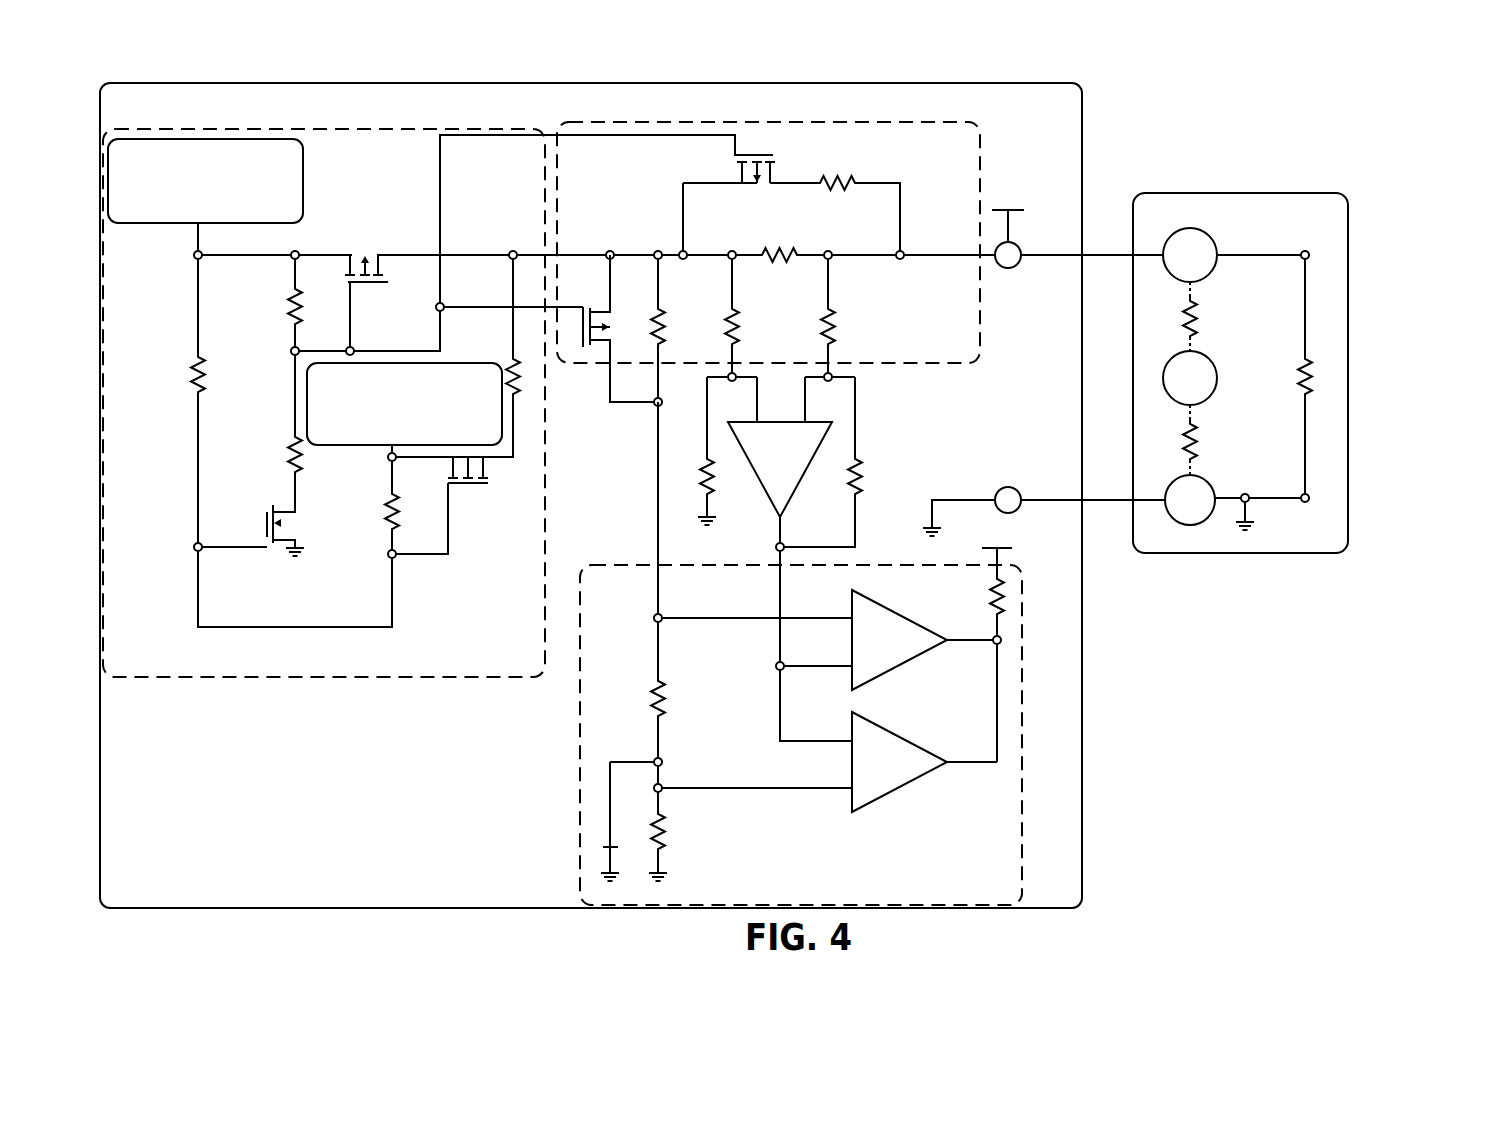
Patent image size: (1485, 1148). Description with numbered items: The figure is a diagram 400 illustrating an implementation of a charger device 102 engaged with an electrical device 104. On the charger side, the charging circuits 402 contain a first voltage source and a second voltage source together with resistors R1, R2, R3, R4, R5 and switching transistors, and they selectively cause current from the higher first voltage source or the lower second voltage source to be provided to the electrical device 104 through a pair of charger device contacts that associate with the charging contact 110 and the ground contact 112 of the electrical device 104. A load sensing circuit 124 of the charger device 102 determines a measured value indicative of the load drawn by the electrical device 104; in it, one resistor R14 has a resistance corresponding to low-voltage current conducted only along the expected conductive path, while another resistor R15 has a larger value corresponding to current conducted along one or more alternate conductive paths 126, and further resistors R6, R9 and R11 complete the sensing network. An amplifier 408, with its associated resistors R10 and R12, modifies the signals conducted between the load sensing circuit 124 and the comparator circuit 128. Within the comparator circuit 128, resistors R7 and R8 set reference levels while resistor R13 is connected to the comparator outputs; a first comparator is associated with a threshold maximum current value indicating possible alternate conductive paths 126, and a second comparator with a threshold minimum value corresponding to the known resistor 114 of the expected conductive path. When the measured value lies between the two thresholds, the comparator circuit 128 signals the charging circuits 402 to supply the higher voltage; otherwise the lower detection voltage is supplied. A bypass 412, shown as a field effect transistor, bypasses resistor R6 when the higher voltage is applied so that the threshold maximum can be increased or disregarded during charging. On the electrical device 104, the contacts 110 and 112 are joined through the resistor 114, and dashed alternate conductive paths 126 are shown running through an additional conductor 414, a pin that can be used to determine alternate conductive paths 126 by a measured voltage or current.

The diagram 400 is at (1386, 98).
The charger device 102 is at (775, 495).
The electrical device 104 is at (1245, 373).
The charging contact 110 is at (1190, 255).
The ground contact 112 is at (1190, 500).
The resistor 114 is at (1286, 375).
The load sensing circuit 124 is at (768, 262).
The alternate conductive path 126 is at (1167, 378).
The comparator circuit 128 is at (958, 726).
The charging circuits 402 is at (438, 403).
The amplifier 408 is at (812, 474).
The bypass 412 is at (600, 352).
The additional conductor 414 is at (1215, 368).
The resistor R1 is at (182, 373).
The resistor R2 is at (282, 305).
The resistor R3 is at (282, 443).
The resistor R4 is at (377, 500).
The resistor R5 is at (524, 384).
The resistor R6 is at (645, 328).
The resistor R7 is at (645, 697).
The resistor R8 is at (645, 833).
The resistor R9 is at (747, 316).
The resistor R10 is at (688, 475).
The resistor R11 is at (849, 316).
The resistor R12 is at (875, 475).
The resistor R13 is at (977, 595).
The resistor R14 is at (835, 194).
The resistor R15 is at (778, 243).